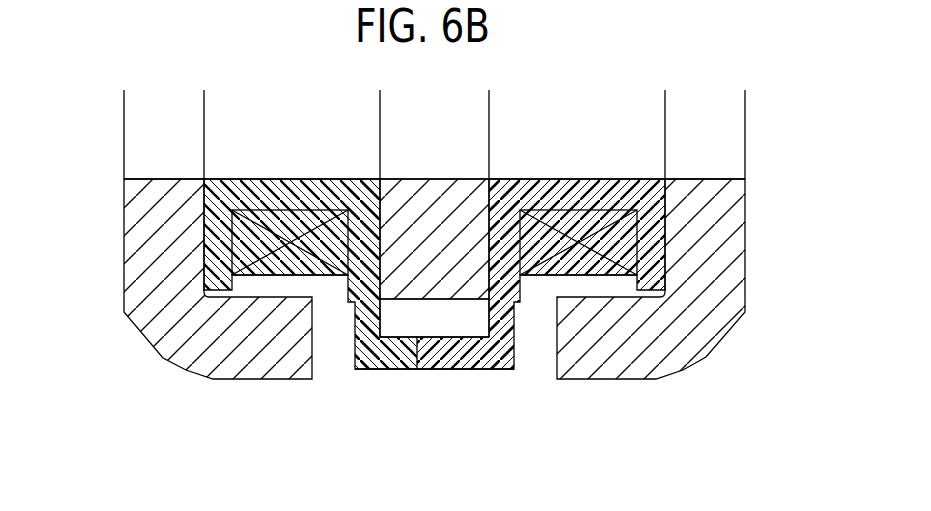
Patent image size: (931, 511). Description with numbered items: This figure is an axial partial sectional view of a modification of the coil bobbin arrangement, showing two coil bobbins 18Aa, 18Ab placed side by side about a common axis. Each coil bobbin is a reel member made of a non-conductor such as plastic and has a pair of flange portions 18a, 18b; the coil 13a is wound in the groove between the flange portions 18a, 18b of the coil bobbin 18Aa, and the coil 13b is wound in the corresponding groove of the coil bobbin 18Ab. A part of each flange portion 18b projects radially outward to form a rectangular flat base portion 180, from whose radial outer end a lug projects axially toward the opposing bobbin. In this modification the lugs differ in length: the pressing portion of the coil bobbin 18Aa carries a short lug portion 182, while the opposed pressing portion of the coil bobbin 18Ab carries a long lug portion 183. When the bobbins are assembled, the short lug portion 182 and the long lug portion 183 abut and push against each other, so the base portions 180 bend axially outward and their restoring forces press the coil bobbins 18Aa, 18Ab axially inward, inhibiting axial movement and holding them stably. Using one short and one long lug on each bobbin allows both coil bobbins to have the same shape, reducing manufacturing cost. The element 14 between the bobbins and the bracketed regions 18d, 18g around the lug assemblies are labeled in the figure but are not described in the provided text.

The coil 13a is at (252, 277).
The coil 13b is at (617, 277).
The core 14 is at (431, 178).
The flange portion 18a is at (217, 222).
The flange portion 18b is at (363, 222).
The coil bobbin 18Aa is at (203, 232).
The coil bobbin 18Ab is at (666, 232).
The base portion 180 is at (365, 312).
The short lug portion 182 is at (398, 350).
The long lug portion 183 is at (468, 350).
The first bottom portion 18d is at (300, 423).
The second bottom portion 18g is at (455, 423).